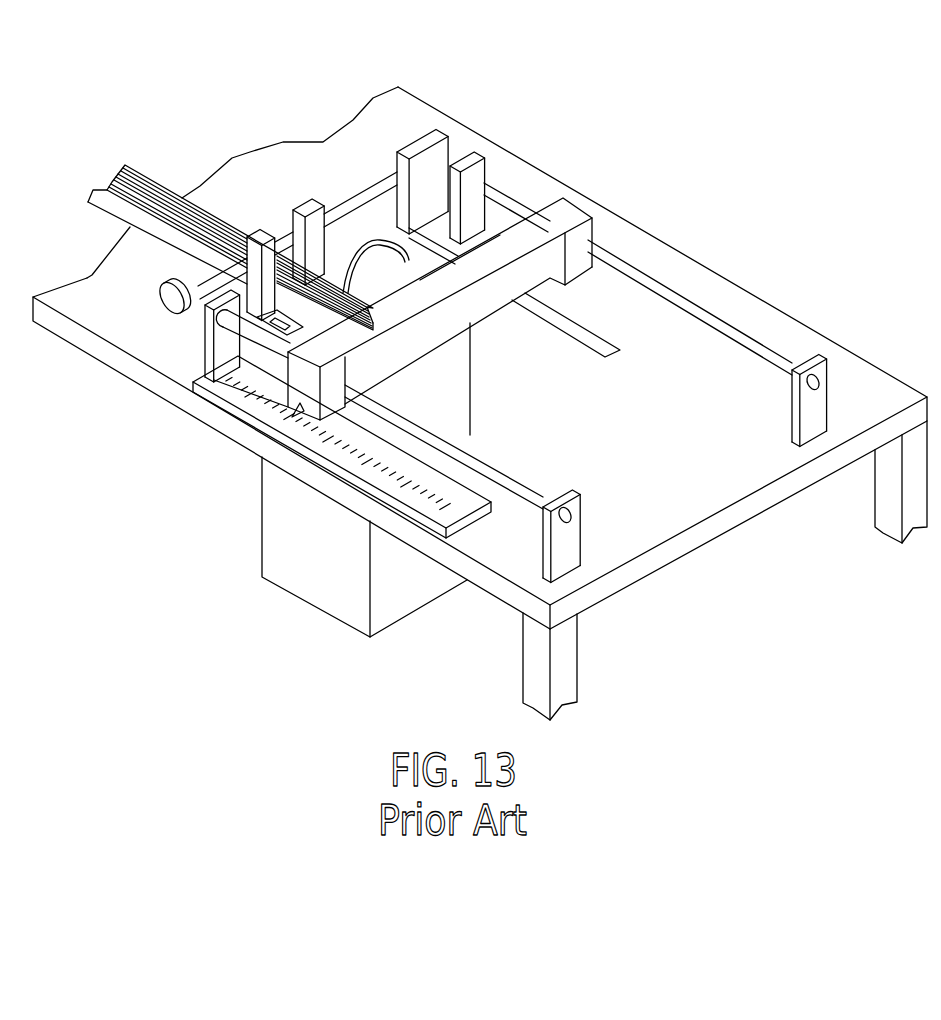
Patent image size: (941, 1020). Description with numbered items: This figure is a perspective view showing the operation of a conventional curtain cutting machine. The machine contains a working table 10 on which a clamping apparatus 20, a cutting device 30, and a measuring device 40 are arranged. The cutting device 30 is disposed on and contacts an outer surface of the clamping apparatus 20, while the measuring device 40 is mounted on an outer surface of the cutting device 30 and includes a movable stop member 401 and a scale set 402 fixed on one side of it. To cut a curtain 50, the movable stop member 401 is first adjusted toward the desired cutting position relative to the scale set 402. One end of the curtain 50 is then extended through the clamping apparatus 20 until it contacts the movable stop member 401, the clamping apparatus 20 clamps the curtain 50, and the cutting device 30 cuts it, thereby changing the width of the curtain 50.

The working table 10 is at (716, 263).
The clamping apparatus 20 is at (240, 210).
The cutting device 30 is at (383, 218).
The measuring device 40 is at (586, 188).
The curtain 50 is at (163, 182).
The movable stop member 401 is at (478, 299).
The scale set 402 is at (362, 472).